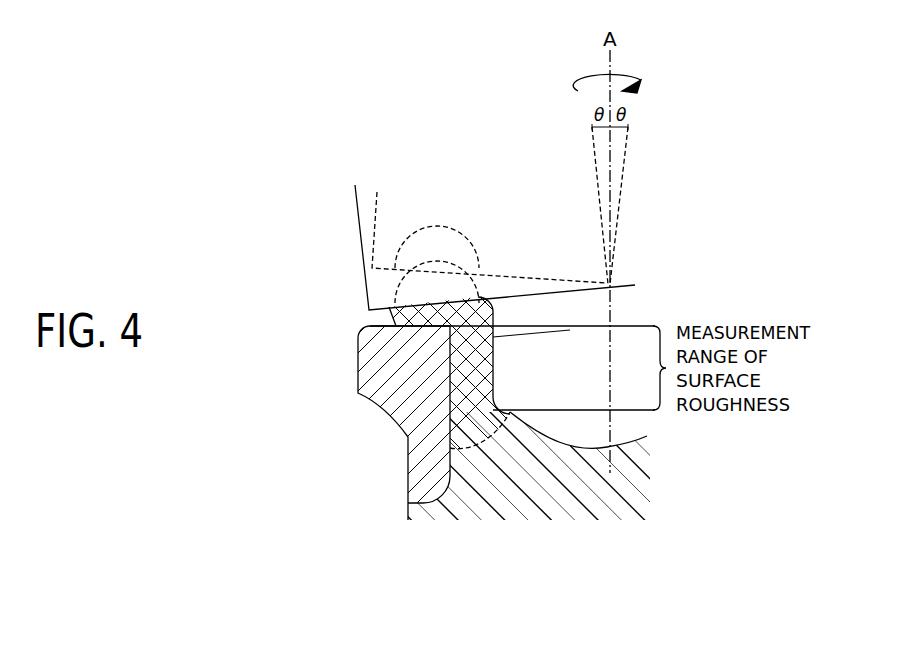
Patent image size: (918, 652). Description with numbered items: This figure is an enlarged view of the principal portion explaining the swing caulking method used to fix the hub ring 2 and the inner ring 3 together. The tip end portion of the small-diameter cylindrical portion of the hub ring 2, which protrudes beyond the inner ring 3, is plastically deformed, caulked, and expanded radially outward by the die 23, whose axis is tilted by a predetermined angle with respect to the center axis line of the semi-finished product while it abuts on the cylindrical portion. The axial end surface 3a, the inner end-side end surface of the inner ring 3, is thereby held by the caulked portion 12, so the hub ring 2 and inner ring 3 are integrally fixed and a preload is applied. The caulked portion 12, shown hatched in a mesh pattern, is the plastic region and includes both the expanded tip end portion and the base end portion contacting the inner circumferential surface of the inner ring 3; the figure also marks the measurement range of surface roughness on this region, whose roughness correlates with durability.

The hub ring 2 is at (552, 488).
The inner ring 3 is at (377, 360).
The axial end surface 3a is at (382, 323).
The caulked portion 12 is at (440, 297).
The die 23 is at (359, 222).